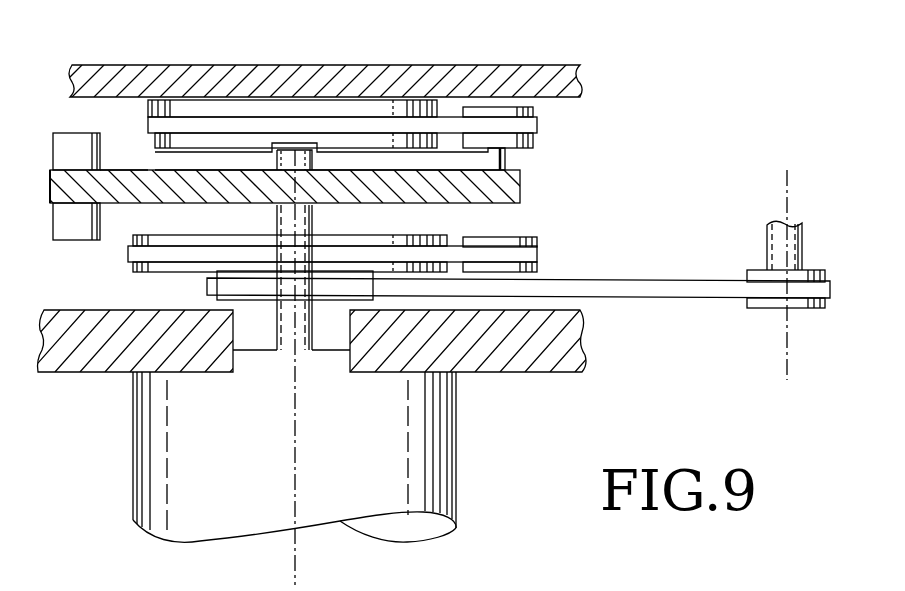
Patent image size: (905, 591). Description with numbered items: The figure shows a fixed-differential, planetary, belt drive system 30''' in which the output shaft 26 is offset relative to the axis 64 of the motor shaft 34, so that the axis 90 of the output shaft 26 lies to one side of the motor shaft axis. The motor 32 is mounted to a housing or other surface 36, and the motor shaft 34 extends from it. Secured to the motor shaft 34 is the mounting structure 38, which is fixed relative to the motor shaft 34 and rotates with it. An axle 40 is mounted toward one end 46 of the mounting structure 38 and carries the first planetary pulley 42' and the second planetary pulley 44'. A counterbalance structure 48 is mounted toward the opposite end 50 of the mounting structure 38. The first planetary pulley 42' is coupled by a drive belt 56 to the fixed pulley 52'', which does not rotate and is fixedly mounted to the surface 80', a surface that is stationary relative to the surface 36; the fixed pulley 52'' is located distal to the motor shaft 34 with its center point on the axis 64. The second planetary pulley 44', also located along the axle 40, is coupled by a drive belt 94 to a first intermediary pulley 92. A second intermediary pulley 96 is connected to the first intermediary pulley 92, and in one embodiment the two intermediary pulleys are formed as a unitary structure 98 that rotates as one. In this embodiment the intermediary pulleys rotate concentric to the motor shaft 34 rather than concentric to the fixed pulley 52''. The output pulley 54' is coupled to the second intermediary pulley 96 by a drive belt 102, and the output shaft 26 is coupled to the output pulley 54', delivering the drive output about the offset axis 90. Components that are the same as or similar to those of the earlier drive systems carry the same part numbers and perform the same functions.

The fixed-differential planetary belt drive system 30''' is at (728, 46).
The surface 80' is at (330, 54).
The fixed pulley 52'' is at (317, 68).
The drive belt 56 is at (537, 127).
The first planetary pulley 42' is at (386, 135).
The axle 40 is at (507, 163).
The opposite end 50 is at (520, 190).
The counterbalance structure 48 is at (53, 147).
The one end 46 is at (48, 183).
The mounting structure 38 is at (123, 168).
The first intermediary pulley 92 is at (200, 235).
The second planetary pulley 44' is at (537, 232).
The drive belt 94 is at (537, 262).
The unitary structure 98 is at (130, 273).
The second intermediary pulley 96 is at (215, 301).
The drive belt 102 is at (717, 300).
The motor shaft 34 is at (277, 327).
The axis 64 is at (297, 430).
The housing or surface 36 is at (553, 373).
The motor 32 is at (458, 455).
The axis 90 is at (785, 203).
The output shaft 26 is at (802, 240).
The output pulley 54' is at (793, 323).